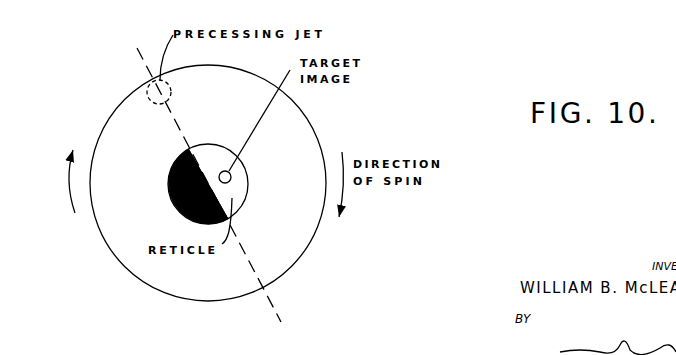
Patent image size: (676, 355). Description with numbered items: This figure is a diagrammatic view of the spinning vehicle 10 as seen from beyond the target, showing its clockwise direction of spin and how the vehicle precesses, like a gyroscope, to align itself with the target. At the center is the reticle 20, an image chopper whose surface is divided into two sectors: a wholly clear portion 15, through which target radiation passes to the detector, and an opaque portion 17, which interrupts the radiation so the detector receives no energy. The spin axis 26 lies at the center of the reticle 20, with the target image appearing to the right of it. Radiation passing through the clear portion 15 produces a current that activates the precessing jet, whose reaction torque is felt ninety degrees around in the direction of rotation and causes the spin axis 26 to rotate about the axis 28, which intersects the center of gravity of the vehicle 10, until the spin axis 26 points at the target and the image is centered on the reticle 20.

The vehicle 10 is at (108, 87).
The clear portion 15 is at (238, 188).
The opaque portion 17 is at (168, 184).
The reticle 20 is at (243, 212).
The spin axis 26 is at (208, 178).
The axis 28 is at (271, 313).